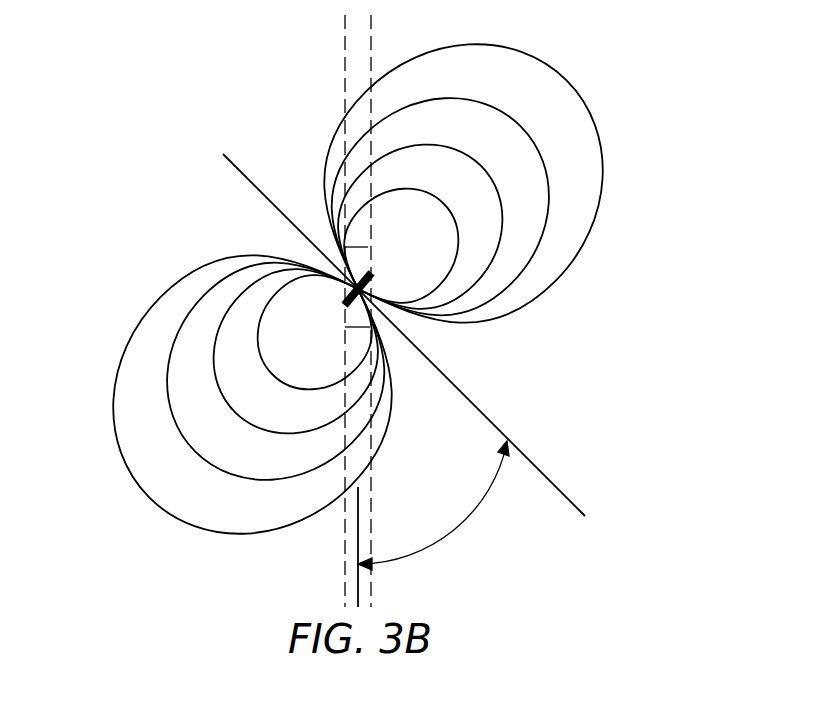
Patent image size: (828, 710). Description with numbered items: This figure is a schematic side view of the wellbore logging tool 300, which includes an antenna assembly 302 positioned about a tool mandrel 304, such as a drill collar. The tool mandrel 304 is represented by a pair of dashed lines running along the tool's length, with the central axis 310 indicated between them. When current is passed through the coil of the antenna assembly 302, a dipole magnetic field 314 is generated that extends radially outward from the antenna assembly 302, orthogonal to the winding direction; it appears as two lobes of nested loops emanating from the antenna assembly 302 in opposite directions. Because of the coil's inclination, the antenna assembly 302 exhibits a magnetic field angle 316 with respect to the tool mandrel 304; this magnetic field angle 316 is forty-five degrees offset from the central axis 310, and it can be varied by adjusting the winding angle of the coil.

The wellbore logging tool 300 is at (430, 341).
The antenna assembly 302 is at (377, 275).
The tool mandrel 304 is at (345, 90).
The central axis 310 is at (357, 582).
The dipole magnetic field 314 is at (604, 142).
The magnetic field angle 316 is at (470, 520).